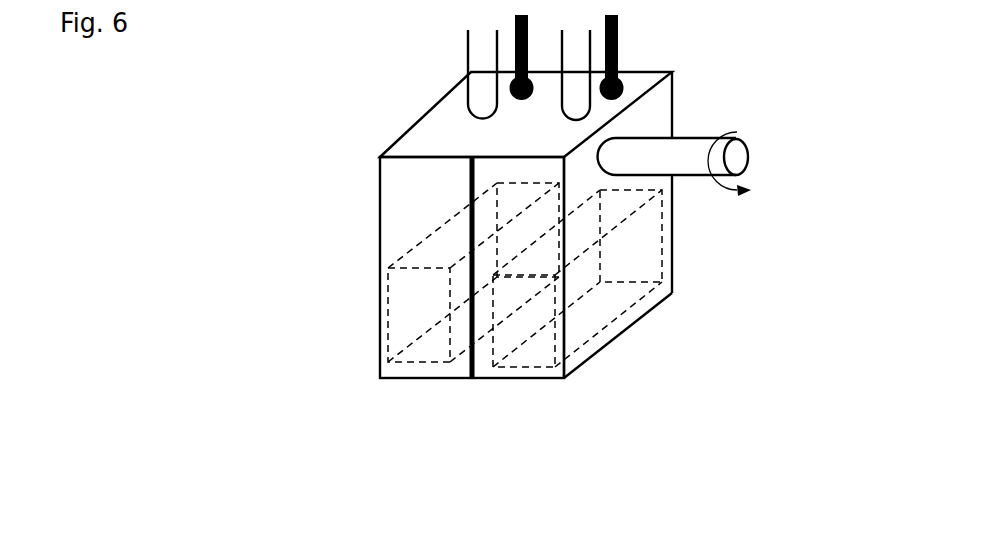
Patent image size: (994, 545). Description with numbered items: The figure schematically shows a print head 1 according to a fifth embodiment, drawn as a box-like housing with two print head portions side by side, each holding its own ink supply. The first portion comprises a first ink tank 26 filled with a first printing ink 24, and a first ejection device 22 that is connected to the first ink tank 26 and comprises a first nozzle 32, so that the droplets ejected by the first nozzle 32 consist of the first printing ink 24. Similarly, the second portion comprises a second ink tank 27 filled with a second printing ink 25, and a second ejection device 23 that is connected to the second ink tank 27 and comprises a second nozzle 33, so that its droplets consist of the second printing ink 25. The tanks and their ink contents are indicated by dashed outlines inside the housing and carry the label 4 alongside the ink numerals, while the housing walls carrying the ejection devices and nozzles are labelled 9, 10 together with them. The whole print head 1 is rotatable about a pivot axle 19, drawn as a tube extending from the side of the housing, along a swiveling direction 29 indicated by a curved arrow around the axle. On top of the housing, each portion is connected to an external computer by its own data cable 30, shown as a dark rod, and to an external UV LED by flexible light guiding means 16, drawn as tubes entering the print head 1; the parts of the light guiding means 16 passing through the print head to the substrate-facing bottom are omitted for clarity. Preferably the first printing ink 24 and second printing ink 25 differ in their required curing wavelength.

The print head 1 is at (746, 70).
The electrochemical cell 4 is at (606, 337).
The housing wall 9 is at (633, 304).
The housing wall 10 is at (633, 304).
The light guiding means 16 is at (572, 97).
The pivot axle 19 is at (738, 158).
The first ejection device 22 is at (544, 304).
The second ejection device 23 is at (686, 283).
The first printing ink 24 is at (473, 337).
The second printing ink 25 is at (659, 278).
The first ink tank 26 is at (415, 352).
The second ink tank 27 is at (623, 295).
The swiveling direction 29 is at (752, 131).
The data cable 30 is at (607, 46).
The first nozzle 32 is at (463, 333).
The second nozzle 33 is at (578, 334).